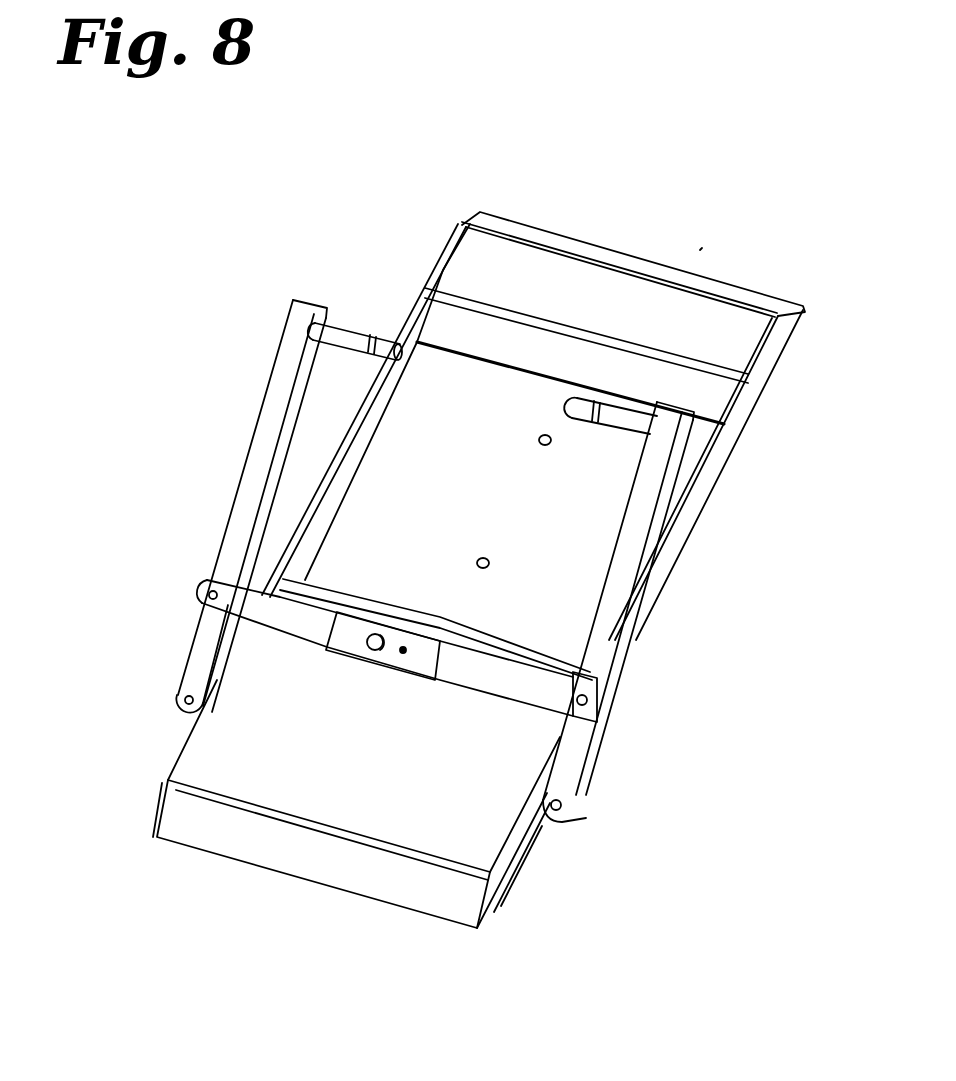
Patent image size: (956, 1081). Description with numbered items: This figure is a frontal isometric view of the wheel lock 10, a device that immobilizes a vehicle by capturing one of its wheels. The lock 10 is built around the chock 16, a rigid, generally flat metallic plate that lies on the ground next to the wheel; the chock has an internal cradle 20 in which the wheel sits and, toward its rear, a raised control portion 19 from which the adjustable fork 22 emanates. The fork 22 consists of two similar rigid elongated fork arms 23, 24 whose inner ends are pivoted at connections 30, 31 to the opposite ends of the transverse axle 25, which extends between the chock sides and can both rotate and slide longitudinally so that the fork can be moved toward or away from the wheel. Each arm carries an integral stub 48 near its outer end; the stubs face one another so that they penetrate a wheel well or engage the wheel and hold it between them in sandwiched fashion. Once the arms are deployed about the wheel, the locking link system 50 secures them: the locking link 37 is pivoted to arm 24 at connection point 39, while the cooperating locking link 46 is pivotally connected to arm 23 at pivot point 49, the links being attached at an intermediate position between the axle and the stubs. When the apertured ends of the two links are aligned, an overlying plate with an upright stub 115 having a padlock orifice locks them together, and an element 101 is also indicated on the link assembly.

The wheel lock 10 is at (700, 250).
The chock 16 is at (697, 555).
The control portion 19 is at (470, 402).
The cradle 20 is at (353, 793).
The fork 22 is at (144, 681).
The fork arm 23 is at (268, 430).
The fork arm 24 is at (661, 655).
The axle 25 is at (542, 822).
The connection 30 is at (183, 690).
The connection 31 is at (627, 834).
The locking link 37 is at (429, 622).
The connection point 39 is at (592, 699).
The locking link 46 is at (429, 602).
The stub 48 is at (355, 323).
The pivot point 49 is at (212, 589).
The locking link system 50 is at (409, 629).
The latch 101 is at (357, 613).
The upright stub 115 is at (373, 650).